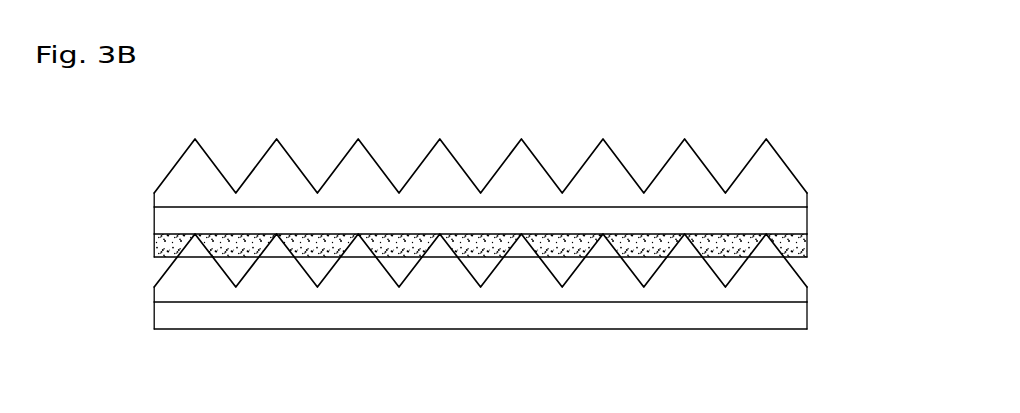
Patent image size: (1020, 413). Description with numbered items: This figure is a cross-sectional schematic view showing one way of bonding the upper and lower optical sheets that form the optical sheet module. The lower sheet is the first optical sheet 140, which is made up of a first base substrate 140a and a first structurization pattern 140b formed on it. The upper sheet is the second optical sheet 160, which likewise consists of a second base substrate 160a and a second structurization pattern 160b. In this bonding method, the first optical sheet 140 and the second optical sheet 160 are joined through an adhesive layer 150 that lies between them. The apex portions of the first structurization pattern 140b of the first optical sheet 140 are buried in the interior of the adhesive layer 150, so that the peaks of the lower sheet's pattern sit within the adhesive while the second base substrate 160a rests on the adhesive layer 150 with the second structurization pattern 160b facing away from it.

The first optical sheet 140 is at (473, 280).
The first base substrate 140a is at (165, 312).
The first structurization pattern 140b is at (167, 278).
The adhesive layer 150 is at (165, 248).
The second optical sheet 160 is at (466, 175).
The second base substrate 160a is at (165, 221).
The second structurization pattern 160b is at (166, 181).